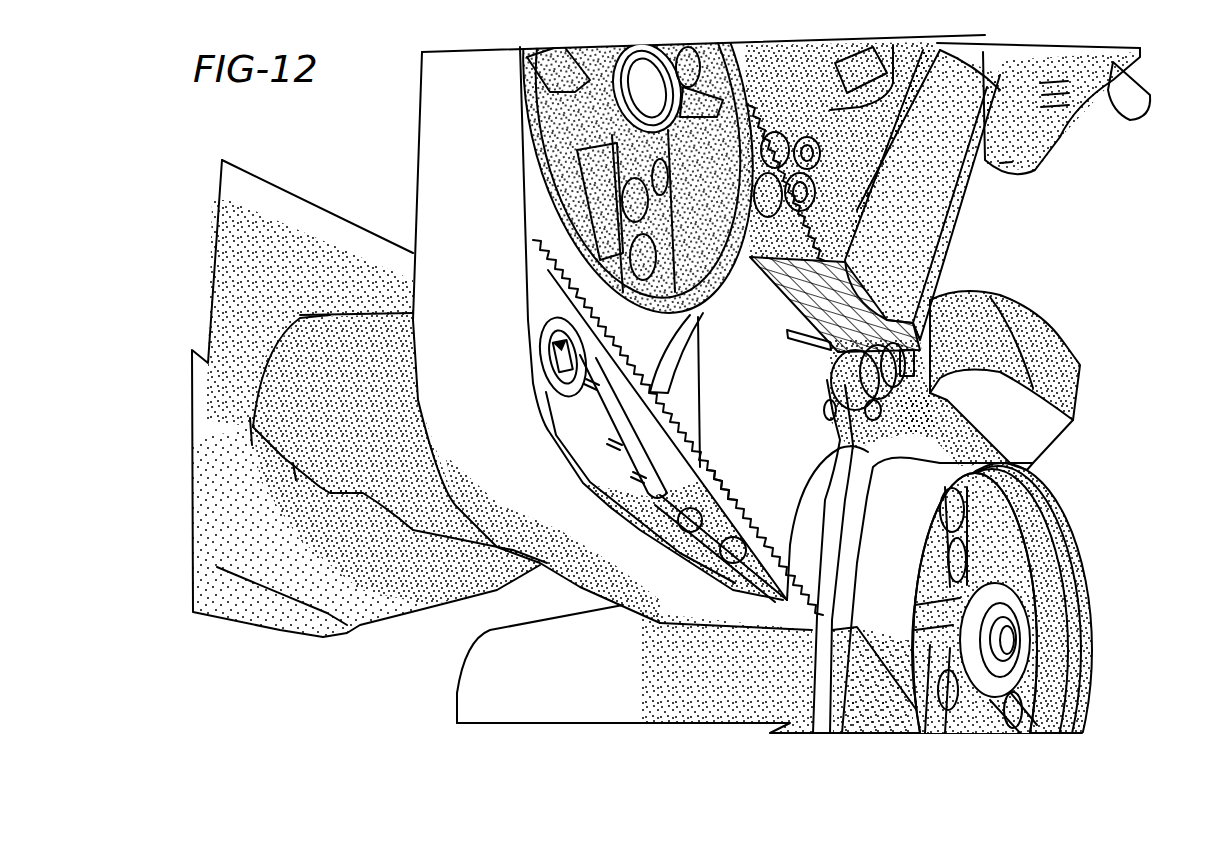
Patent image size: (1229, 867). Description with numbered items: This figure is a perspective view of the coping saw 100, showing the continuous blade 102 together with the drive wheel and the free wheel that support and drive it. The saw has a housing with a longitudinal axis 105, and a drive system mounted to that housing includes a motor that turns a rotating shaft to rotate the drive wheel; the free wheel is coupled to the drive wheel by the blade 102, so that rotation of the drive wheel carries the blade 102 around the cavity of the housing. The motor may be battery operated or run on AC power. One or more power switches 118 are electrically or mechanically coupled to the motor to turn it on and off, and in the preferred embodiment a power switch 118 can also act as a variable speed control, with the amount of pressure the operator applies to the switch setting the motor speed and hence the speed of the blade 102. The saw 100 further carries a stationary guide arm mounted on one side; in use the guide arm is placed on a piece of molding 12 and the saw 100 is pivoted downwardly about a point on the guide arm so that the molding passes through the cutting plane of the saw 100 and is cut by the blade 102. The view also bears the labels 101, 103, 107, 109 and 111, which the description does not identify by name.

The molding piece 12 is at (952, 250).
The coping saw 100 is at (1108, 430).
The frame 101 is at (768, 355).
The continuous blade 102 is at (663, 407).
The belt teeth 103 is at (720, 473).
The longitudinal axis 105 is at (933, 430).
The guide rail 107 is at (660, 424).
The arch support 109 is at (940, 458).
The tooth 111 is at (728, 486).
The power switch 118 is at (1058, 320).